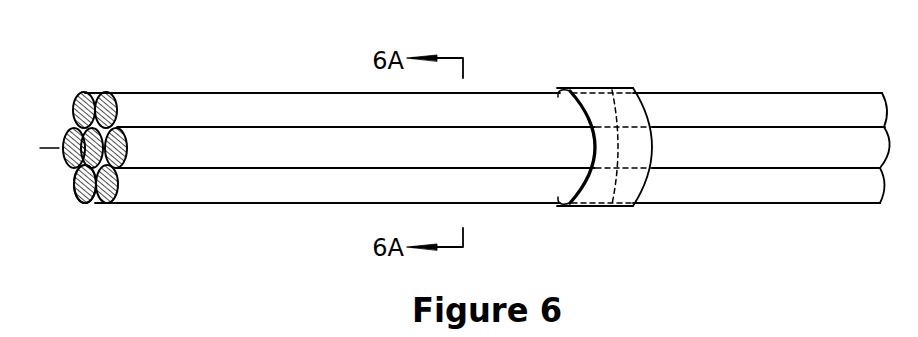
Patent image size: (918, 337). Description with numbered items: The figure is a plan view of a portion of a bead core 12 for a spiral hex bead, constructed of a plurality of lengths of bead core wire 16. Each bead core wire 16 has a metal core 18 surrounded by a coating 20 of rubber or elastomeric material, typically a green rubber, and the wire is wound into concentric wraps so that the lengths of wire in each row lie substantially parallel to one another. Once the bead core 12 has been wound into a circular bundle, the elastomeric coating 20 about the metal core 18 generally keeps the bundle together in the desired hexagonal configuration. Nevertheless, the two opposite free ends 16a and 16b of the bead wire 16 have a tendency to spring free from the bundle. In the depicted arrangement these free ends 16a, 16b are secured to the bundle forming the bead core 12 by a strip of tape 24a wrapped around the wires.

The bead core 12 is at (731, 55).
The bead core wire 16 is at (193, 183).
The free end of the bead wire 16a is at (598, 188).
The free end of the bead wire 16b is at (635, 113).
The metal core 18 is at (72, 186).
The coating 20 is at (90, 203).
The strip of tape 24a is at (637, 150).